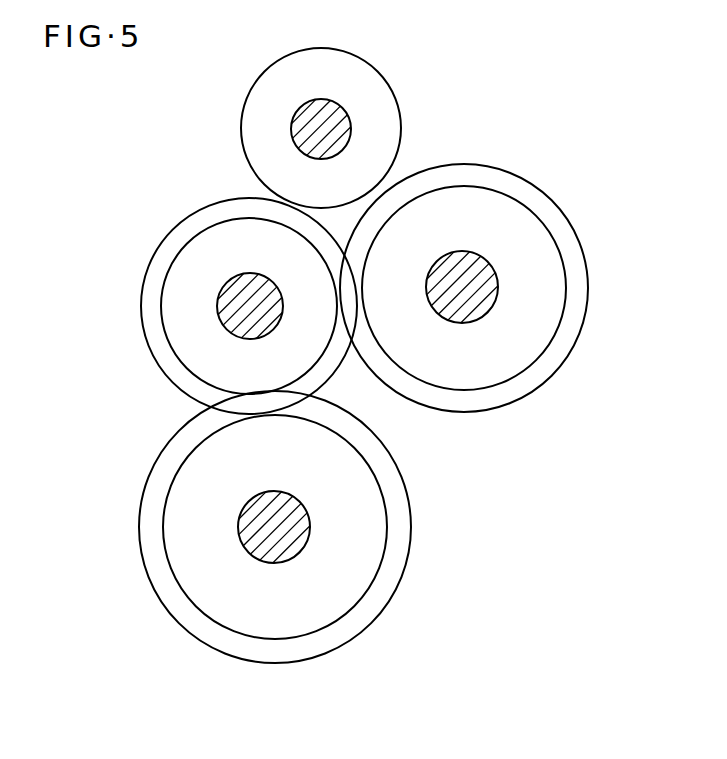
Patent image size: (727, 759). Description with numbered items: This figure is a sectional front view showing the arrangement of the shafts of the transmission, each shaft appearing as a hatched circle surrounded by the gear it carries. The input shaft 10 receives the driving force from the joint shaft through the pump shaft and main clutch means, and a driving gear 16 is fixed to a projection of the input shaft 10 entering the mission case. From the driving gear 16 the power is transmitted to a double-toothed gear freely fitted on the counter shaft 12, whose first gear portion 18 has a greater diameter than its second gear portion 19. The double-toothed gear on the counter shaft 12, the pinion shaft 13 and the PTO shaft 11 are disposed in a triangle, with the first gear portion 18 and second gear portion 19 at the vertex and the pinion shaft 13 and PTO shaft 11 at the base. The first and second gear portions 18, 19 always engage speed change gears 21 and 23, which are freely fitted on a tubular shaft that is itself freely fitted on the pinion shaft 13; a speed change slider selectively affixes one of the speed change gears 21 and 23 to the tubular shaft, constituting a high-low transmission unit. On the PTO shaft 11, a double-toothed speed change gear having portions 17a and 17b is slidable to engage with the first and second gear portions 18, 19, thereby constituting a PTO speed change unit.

The input shaft 10 is at (328, 150).
The PTO shaft 11 is at (481, 256).
The counter shaft 12 is at (285, 305).
The pinion shaft 13 is at (245, 515).
The driving gear 16 is at (413, 101).
The double-toothed speed change gear portion 17a is at (562, 313).
The double-toothed speed change gear portion 17b is at (477, 414).
The first gear portion 18 is at (171, 228).
The second gear portion 19 is at (163, 305).
The speed change gear 21 is at (164, 505).
The speed change gear 23 is at (167, 445).